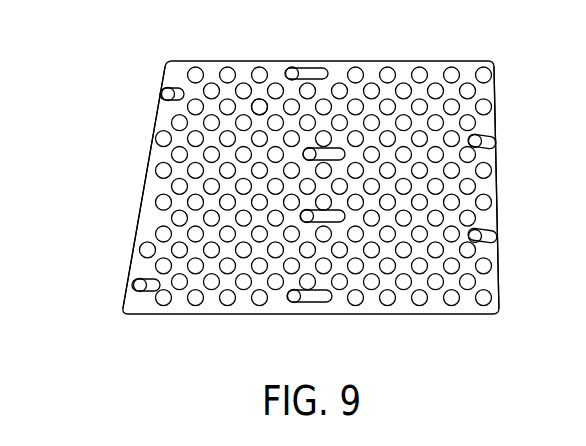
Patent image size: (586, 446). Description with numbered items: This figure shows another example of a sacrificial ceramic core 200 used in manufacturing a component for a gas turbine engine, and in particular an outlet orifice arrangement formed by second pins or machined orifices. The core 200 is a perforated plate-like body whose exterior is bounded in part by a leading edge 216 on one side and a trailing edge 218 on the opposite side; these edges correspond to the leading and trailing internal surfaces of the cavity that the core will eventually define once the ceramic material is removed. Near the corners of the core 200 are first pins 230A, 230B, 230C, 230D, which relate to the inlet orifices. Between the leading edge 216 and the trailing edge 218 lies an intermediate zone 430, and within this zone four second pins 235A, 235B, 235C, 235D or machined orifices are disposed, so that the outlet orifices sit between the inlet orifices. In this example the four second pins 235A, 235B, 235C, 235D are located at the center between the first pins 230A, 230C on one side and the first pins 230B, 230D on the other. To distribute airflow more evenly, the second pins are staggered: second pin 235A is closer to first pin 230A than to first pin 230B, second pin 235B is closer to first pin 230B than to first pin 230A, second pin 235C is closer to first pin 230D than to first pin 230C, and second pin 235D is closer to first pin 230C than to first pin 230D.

The sacrificial ceramic core 200 is at (464, 63).
The leading edge 216 is at (498, 185).
The trailing edge 218 is at (145, 174).
The first pin 230A is at (131, 289).
The first pin 230B is at (497, 233).
The first pin 230C is at (162, 94).
The first pin 230D is at (497, 143).
The second pin 235A is at (311, 302).
The second pin 235B is at (323, 213).
The second pin 235C is at (323, 152).
The second pin 235D is at (307, 67).
The intermediate zone 430 is at (258, 92).